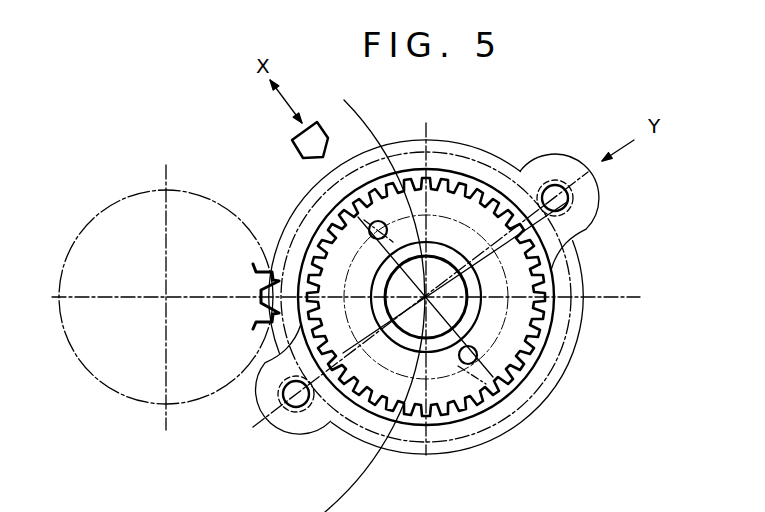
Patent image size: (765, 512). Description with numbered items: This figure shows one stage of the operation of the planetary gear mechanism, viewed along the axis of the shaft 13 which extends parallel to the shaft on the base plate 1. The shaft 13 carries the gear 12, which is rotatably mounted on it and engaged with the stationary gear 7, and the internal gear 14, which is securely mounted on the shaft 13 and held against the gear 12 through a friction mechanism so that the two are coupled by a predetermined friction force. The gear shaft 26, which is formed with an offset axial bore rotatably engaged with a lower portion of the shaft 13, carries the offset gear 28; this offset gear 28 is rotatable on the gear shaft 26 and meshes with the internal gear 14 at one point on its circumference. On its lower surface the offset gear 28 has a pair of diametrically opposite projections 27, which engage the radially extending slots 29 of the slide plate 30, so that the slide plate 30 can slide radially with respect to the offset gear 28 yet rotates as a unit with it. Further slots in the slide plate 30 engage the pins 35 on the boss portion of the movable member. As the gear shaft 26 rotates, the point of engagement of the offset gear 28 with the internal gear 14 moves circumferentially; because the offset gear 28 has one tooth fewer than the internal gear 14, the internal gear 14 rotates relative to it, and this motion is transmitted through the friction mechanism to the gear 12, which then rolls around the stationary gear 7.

The base plate 1 is at (310, 140).
The gear 7 is at (207, 197).
The gear 12 is at (303, 206).
The shaft 13 is at (407, 327).
The internal gear 14 is at (581, 287).
The gear shaft 26 is at (447, 251).
The projections 27 is at (370, 237).
The offset gear 28 is at (516, 284).
The radially extending slots 29 is at (372, 221).
The slide plate 30 is at (594, 222).
The pins 35 is at (556, 185).